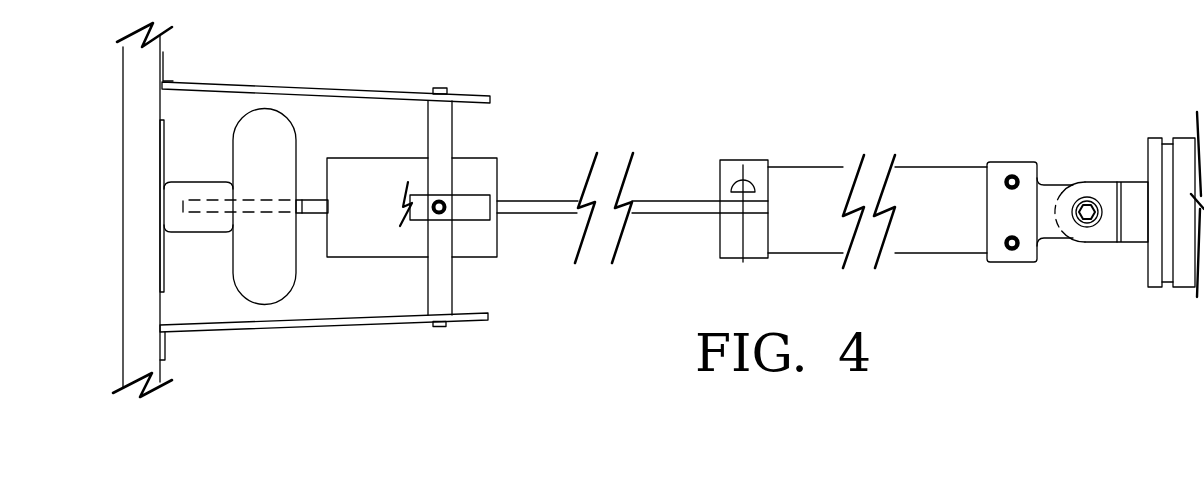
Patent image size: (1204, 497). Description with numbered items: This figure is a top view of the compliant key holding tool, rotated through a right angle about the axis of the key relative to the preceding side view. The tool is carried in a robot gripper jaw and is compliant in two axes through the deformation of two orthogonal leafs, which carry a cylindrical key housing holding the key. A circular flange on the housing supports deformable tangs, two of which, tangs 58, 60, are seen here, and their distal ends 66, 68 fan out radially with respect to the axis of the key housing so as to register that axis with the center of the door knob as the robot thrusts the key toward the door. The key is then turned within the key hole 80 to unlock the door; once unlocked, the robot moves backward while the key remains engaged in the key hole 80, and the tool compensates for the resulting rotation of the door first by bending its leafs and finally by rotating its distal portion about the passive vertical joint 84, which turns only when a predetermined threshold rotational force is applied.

The deformable tang 58 is at (340, 88).
The deformable tang 60 is at (358, 325).
The distal end of tang 66 is at (173, 53).
The distal end of tang 68 is at (168, 355).
The key hole 80 is at (207, 200).
The passive vertical joint 84 is at (1100, 180).